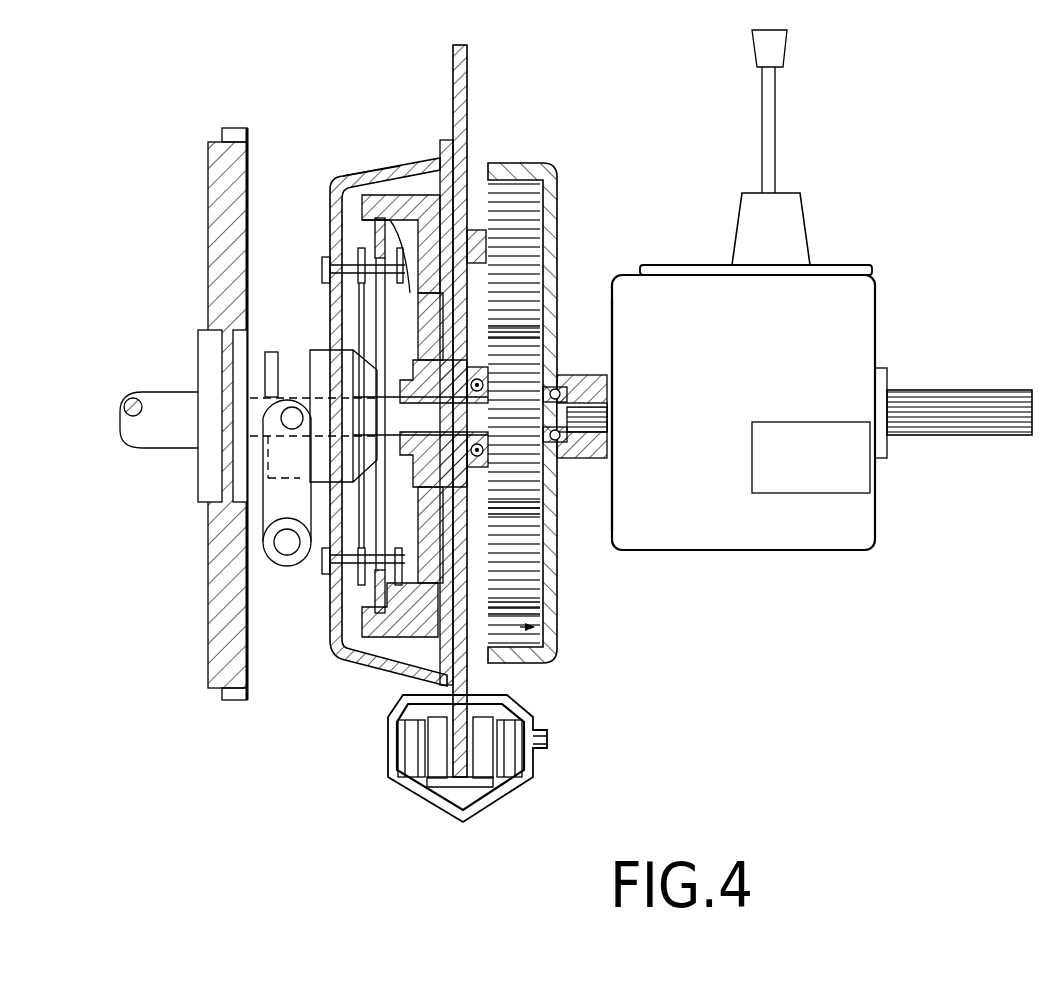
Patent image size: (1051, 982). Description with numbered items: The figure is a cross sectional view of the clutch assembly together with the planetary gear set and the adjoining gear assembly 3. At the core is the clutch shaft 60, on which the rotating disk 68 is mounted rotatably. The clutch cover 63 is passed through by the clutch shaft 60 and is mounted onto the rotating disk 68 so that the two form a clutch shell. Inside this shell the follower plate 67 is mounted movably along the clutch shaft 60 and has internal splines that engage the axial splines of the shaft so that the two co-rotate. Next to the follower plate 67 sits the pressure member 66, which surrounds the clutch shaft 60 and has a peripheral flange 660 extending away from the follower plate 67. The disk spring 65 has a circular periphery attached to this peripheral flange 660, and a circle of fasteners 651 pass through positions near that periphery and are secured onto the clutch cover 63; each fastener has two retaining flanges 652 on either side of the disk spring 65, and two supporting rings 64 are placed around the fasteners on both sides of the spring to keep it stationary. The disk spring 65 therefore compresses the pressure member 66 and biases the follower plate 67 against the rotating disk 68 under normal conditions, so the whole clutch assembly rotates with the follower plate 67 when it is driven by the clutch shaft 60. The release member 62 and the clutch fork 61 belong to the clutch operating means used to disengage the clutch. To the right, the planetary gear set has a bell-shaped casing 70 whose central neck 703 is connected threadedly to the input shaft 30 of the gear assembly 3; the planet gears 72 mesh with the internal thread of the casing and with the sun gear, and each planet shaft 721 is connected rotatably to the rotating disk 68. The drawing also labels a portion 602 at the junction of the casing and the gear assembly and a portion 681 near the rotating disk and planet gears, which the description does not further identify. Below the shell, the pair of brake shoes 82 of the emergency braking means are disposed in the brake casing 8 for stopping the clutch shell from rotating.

The gear assembly 3 is at (928, 308).
The brake casing 8 is at (515, 802).
The input shaft 30 is at (590, 433).
The clutch shaft 60 is at (260, 365).
The clutch fork 61 is at (277, 565).
The release member 62 is at (322, 373).
The clutch cover 63 is at (332, 190).
The supporting rings 64 is at (372, 242).
The disk spring 65 is at (377, 326).
The pressure member 66 is at (377, 210).
The follower plate 67 is at (448, 203).
The rotating disk 68 is at (463, 70).
The bell-shaped casing 70 is at (538, 177).
The planet gears 72 is at (540, 645).
The brake shoes 82 is at (422, 730).
The bearing boss 602 is at (580, 372).
The fasteners 651 is at (347, 268).
The retaining flanges 652 is at (412, 230).
The peripheral flange 660 is at (350, 172).
The bearing 681 is at (487, 452).
The central neck 703 is at (613, 362).
The planet shaft 721 is at (472, 233).